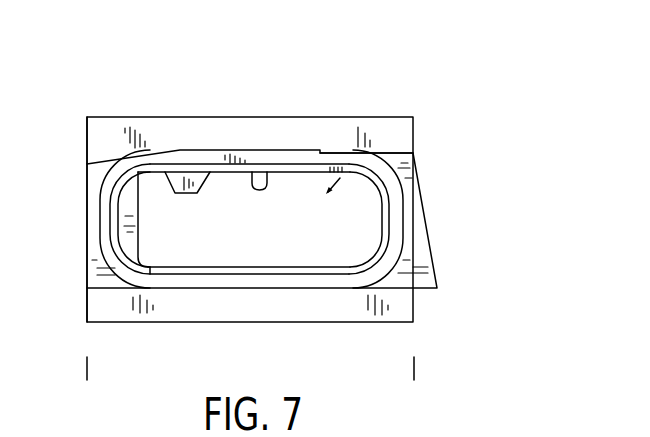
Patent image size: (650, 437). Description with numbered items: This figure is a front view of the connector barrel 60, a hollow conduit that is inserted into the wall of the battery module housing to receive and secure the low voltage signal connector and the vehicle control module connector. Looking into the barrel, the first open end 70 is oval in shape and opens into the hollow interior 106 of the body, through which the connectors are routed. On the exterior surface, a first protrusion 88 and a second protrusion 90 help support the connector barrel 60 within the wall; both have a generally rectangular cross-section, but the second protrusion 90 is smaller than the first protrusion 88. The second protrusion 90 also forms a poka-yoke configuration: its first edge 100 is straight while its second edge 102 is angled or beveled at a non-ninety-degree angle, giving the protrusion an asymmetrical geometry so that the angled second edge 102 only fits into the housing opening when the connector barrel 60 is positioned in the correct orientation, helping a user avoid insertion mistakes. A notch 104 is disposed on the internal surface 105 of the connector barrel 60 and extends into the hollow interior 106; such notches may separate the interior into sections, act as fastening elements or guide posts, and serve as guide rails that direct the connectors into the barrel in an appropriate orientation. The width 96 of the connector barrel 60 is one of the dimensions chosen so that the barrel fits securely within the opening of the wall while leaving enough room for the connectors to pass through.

The connector barrel 60 is at (488, 76).
The first open end 70 is at (216, 247).
The first protrusion 88 is at (98, 142).
The second protrusion 90 is at (98, 180).
The width 96 is at (90, 368).
The first edge 100 is at (87, 228).
The second edge 102 is at (426, 219).
The notch 104 is at (215, 172).
The internal surface 105 is at (270, 172).
The hollow interior 106 is at (351, 153).